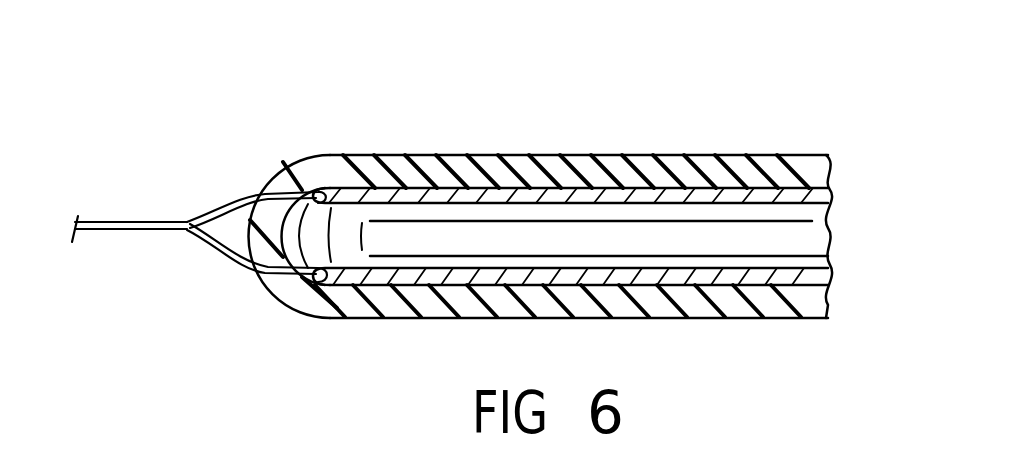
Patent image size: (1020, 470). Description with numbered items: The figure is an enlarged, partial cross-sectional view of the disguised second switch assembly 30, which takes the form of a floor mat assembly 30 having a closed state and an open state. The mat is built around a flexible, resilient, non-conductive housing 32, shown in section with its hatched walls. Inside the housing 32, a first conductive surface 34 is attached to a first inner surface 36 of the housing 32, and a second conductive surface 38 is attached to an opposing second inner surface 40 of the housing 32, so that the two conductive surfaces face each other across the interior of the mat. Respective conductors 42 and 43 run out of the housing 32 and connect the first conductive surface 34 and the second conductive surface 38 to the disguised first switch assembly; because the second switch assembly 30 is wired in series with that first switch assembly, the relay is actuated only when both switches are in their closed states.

The disguised second switch assembly 30 is at (377, 145).
The flexible, resilient, non-conductive housing 32 is at (677, 171).
The first conductive surface 34 is at (792, 205).
The first inner surface 36 is at (530, 186).
The second conductive surface 38 is at (800, 266).
The second inner surface 40 is at (748, 274).
The conductor 42 is at (224, 200).
The conductor 43 is at (229, 254).